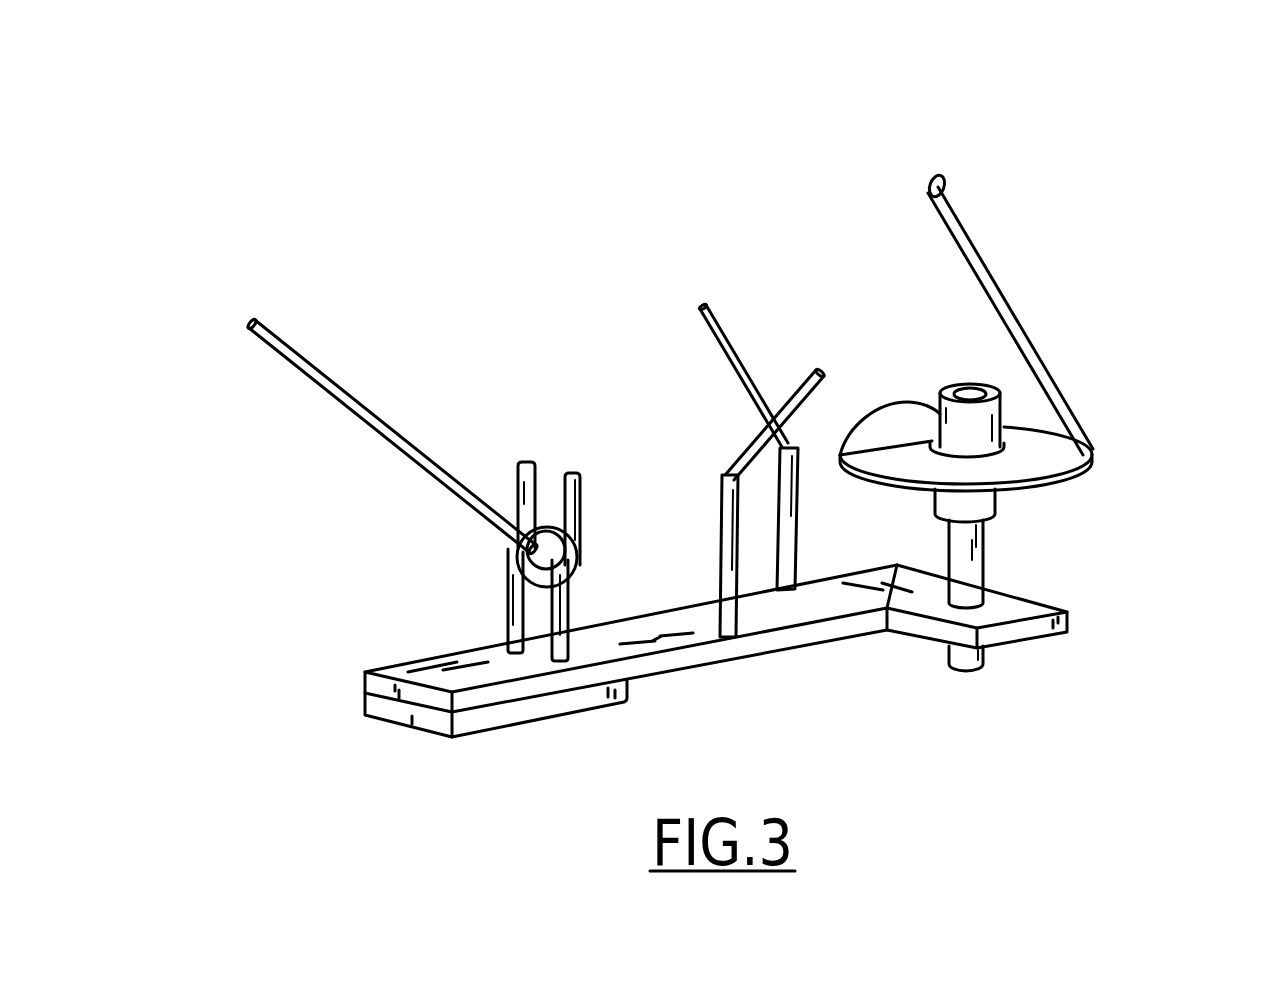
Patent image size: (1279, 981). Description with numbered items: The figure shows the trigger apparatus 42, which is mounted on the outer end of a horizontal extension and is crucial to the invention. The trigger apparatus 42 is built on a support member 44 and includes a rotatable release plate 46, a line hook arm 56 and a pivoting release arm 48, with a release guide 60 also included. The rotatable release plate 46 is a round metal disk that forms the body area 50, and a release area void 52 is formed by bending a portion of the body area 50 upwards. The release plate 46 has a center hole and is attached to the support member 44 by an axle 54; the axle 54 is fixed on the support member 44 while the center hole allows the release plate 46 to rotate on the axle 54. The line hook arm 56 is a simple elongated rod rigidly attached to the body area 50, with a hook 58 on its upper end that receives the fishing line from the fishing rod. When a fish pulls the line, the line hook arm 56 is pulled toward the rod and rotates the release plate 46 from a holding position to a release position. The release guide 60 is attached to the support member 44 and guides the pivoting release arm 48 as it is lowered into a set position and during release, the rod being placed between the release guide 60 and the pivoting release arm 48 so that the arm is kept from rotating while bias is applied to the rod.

The trigger apparatus 42 is at (1019, 28).
The support member 44 is at (622, 648).
The rotatable release plate 46 is at (1039, 478).
The pivoting release arm 48 is at (308, 353).
The body area 50 is at (1095, 462).
The release area void 52 is at (877, 390).
The axle 54 is at (987, 562).
The line hook arm 56 is at (1025, 277).
The hook 58 is at (943, 177).
The release guide 60 is at (695, 312).